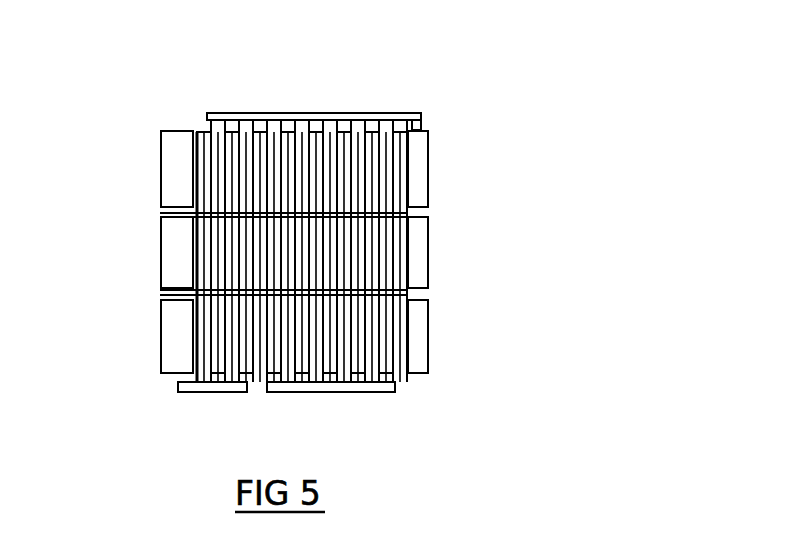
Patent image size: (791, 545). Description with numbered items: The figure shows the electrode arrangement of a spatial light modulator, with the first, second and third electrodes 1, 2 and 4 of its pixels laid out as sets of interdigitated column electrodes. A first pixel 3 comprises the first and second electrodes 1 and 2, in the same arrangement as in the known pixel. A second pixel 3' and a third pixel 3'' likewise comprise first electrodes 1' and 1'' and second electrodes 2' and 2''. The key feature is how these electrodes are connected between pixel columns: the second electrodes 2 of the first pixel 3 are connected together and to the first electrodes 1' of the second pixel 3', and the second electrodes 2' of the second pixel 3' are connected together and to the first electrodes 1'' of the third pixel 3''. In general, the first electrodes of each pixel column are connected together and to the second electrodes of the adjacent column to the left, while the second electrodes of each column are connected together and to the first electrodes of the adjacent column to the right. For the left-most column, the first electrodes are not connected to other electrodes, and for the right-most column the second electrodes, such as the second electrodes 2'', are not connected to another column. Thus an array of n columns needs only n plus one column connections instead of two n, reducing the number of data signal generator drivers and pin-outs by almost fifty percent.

The first electrodes 1 is at (113, 158).
The first electrodes of the second pixel 1' is at (356, 219).
The first electrodes of the third pixel 1'' is at (318, 285).
The second electrodes 2 is at (227, 84).
The second electrodes of the second pixel 2' is at (286, 389).
The second electrodes of the third pixel 2'' is at (442, 122).
The first pixel 3 is at (113, 237).
The second pixel 3' is at (358, 318).
The third pixel 3'' is at (466, 252).
The third electrodes 4 is at (178, 312).